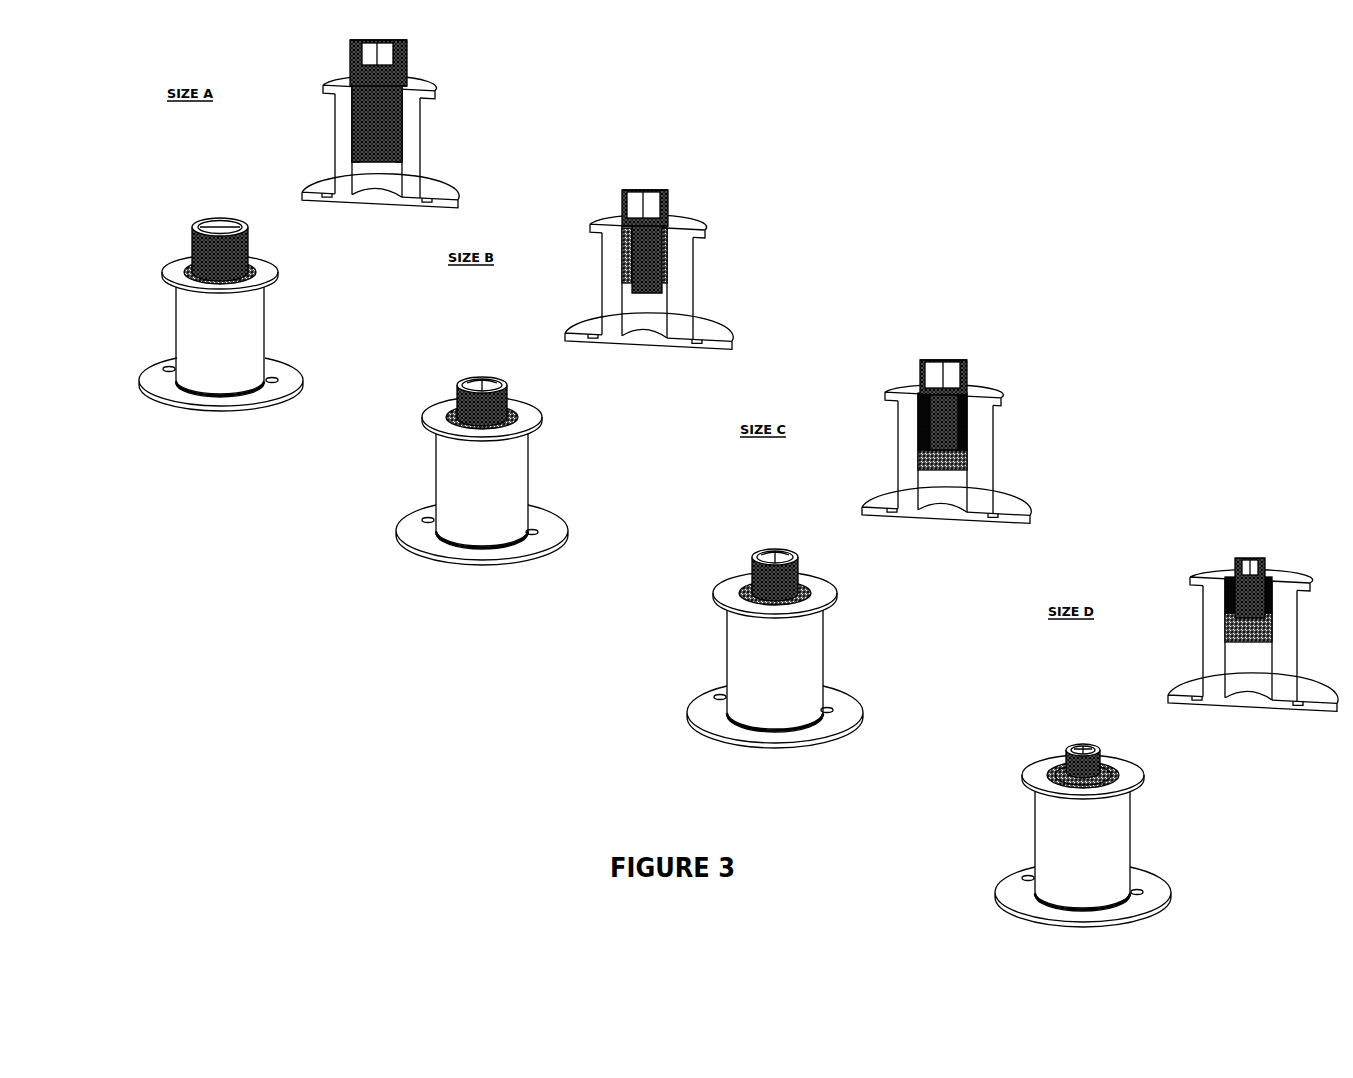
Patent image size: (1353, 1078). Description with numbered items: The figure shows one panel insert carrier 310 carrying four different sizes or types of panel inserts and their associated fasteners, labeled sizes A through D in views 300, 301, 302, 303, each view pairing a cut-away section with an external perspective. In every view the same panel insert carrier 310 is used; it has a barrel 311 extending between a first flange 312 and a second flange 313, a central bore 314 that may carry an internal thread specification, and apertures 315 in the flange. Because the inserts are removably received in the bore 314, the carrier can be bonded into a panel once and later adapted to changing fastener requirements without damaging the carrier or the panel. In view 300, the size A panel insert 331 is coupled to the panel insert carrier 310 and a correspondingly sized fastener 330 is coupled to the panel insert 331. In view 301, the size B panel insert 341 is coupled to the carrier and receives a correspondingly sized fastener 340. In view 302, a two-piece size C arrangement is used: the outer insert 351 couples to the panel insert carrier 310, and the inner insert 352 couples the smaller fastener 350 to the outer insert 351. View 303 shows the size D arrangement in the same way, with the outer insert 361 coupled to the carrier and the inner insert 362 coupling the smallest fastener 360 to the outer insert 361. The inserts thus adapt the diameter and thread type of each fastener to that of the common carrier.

The view 300 is at (228, 137).
The view 301 is at (508, 292).
The view 302 is at (804, 457).
The view 303 is at (1108, 645).
The panel insert carrier 310 is at (719, 515).
The barrel 311 is at (335, 140).
The first flange 312 is at (302, 188).
The second flange 313 is at (162, 273).
The bore 314 is at (391, 181).
The apertures 315 is at (425, 205).
The fastener 330 is at (350, 50).
The panel insert 331 is at (187, 268).
The fastener 340 is at (622, 195).
The panel insert 341 is at (446, 414).
The fastener 350 is at (920, 370).
The outer insert 351 is at (737, 590).
The inner insert 352 is at (920, 420).
The fastener 360 is at (1235, 562).
The outer insert 361 is at (1047, 770).
The inner insert 362 is at (1227, 600).